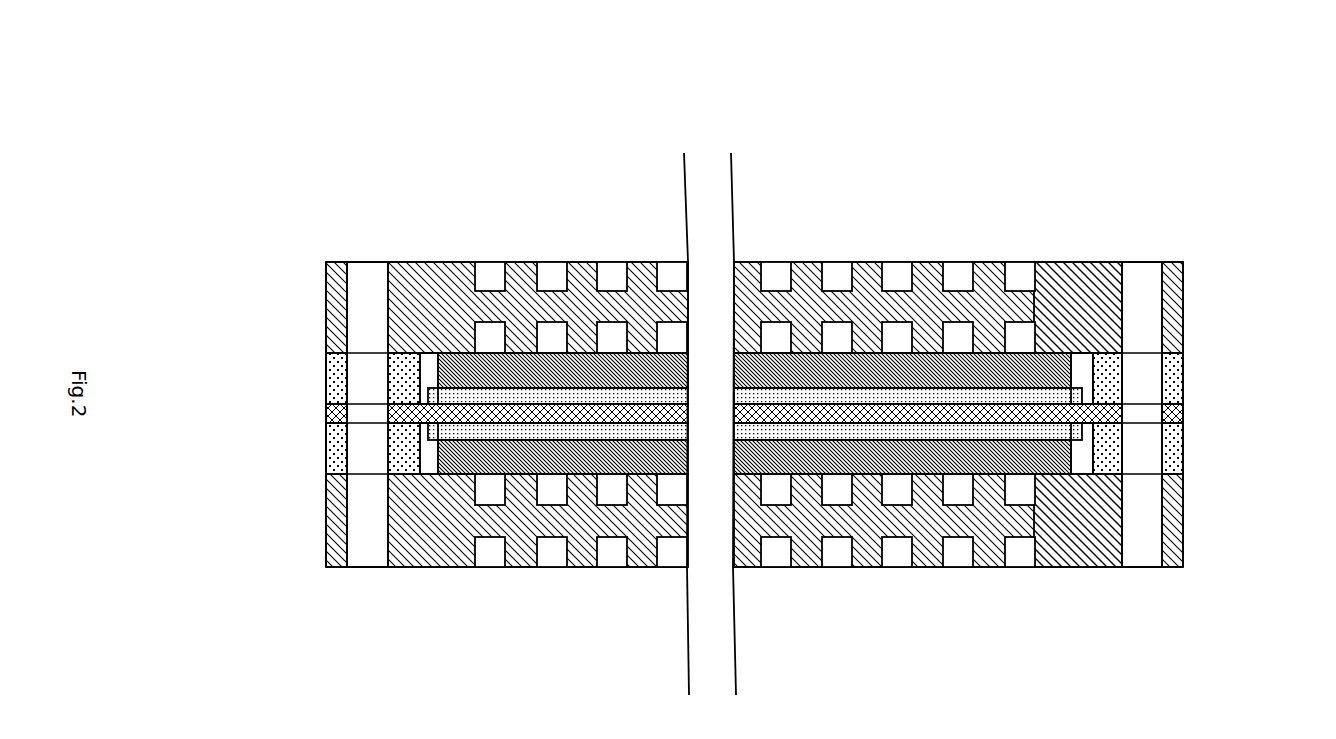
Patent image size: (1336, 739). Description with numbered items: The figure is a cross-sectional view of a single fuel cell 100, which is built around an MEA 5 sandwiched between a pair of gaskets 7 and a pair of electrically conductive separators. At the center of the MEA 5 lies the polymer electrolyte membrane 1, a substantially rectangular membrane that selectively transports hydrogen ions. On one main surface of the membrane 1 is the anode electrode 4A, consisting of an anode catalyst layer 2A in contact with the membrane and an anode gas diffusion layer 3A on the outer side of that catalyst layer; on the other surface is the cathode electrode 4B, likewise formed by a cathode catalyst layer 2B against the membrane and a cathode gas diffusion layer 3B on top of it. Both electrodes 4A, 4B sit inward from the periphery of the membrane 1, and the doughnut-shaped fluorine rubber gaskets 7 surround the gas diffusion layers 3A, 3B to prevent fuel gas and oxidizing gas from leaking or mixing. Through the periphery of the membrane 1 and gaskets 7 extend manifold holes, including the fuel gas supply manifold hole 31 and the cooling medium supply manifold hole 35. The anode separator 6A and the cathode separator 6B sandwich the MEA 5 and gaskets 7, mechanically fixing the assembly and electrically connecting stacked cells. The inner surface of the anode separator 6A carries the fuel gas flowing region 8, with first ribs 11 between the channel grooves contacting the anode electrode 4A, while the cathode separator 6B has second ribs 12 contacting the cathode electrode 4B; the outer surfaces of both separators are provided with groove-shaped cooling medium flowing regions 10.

The fuel cell 100 is at (668, 67).
The polymer electrolyte membrane 1 is at (1183, 413).
The anode catalyst layer 2A is at (1183, 438).
The cathode catalyst layer 2B is at (1183, 393).
The anode gas diffusion layer 3A is at (1183, 472).
The cathode gas diffusion layer 3B is at (1183, 358).
The anode electrode 4A is at (1248, 430).
The cathode electrode 4B is at (1248, 337).
The MEA 5 is at (1294, 353).
The anode separator 6A is at (1082, 550).
The cathode separator 6B is at (1082, 275).
The gasket 7 is at (338, 366).
The fuel gas flowing region 8 is at (893, 490).
The cooling medium flowing region 10 is at (492, 275).
The first rib 11 is at (803, 490).
The second rib 12 is at (866, 340).
The fuel gas supply manifold hole 31 is at (366, 254).
The cooling medium supply manifold hole 35 is at (1146, 254).